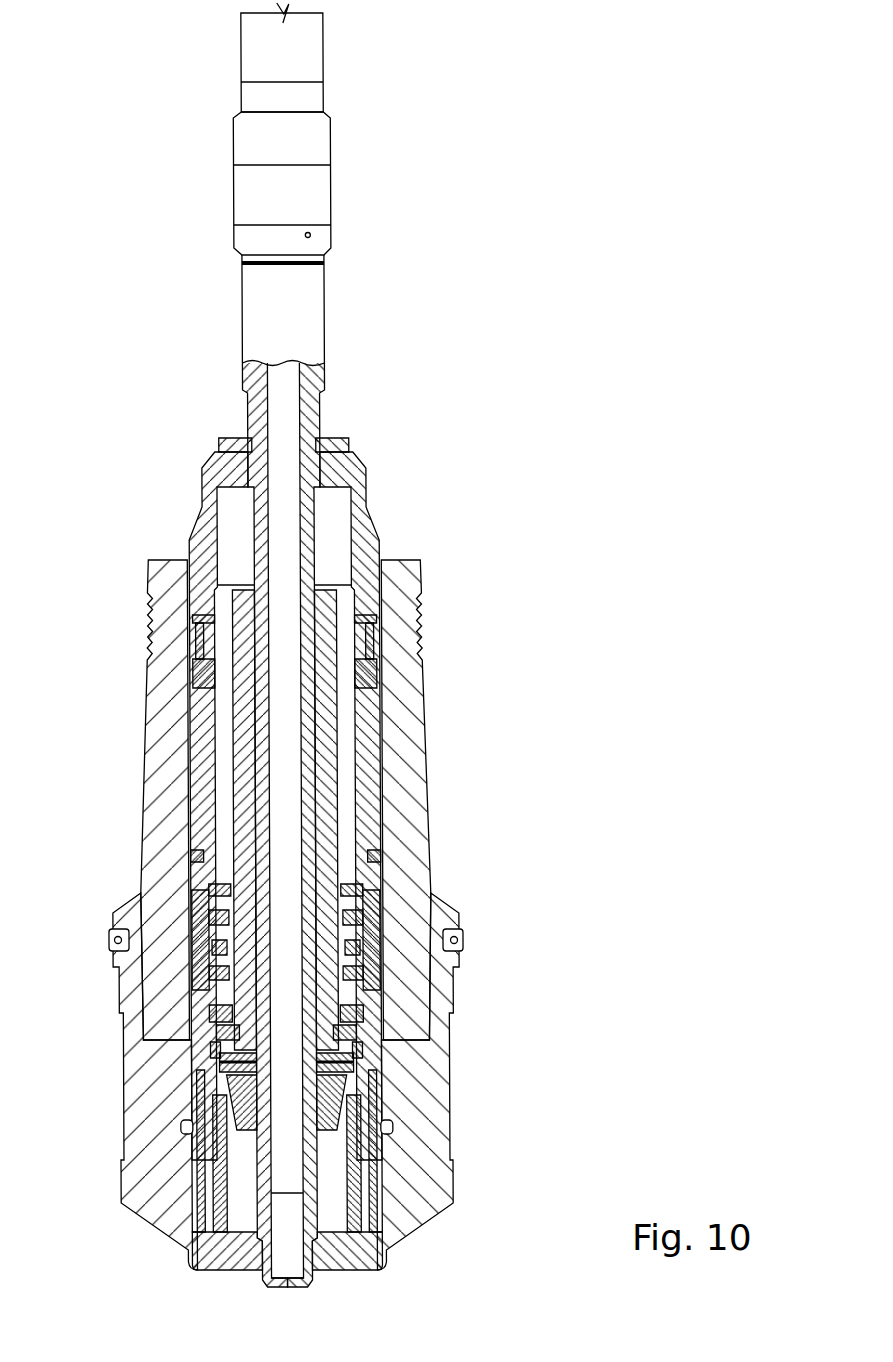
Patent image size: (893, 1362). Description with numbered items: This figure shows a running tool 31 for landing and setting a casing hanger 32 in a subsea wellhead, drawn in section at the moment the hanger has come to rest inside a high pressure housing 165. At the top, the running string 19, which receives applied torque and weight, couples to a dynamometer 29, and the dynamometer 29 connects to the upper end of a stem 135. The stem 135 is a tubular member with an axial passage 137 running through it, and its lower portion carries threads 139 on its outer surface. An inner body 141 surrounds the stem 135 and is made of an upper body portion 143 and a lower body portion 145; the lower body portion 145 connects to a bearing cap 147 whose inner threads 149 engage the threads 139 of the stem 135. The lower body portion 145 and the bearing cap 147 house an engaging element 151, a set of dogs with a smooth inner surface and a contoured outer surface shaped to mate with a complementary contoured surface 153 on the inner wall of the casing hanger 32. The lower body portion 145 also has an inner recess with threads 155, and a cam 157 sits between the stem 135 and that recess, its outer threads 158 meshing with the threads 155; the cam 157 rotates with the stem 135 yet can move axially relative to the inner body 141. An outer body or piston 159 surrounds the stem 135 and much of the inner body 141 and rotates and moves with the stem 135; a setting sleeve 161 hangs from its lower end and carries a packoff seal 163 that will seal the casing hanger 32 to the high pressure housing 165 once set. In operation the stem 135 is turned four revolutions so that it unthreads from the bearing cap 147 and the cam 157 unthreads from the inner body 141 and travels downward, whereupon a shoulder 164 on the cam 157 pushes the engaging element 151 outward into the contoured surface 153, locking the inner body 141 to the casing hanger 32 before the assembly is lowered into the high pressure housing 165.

The drill string 19 is at (323, 45).
The dynamometer 29 is at (330, 180).
The running tool 31 is at (178, 458).
The casing hanger 32 is at (195, 1040).
The stem 135 is at (323, 418).
The axial passage 137 is at (270, 404).
The threads 139 is at (330, 1118).
The inner body 141 is at (192, 633).
The upper body portion 143 is at (200, 545).
The lower body portion 145 is at (190, 895).
The bearing cap 147 is at (228, 1118).
The threads 149 is at (232, 1078).
The engaging element 151 is at (360, 1015).
The contoured surface 153 is at (375, 1030).
The threads 155 is at (385, 972).
The cam 157 is at (385, 917).
The threads 158 is at (378, 890).
The piston 159 is at (357, 455).
The setting sleeve 161 is at (380, 857).
The packoff seal 163 is at (395, 948).
The shoulder 164 is at (355, 1050).
The high pressure housing 165 is at (430, 828).